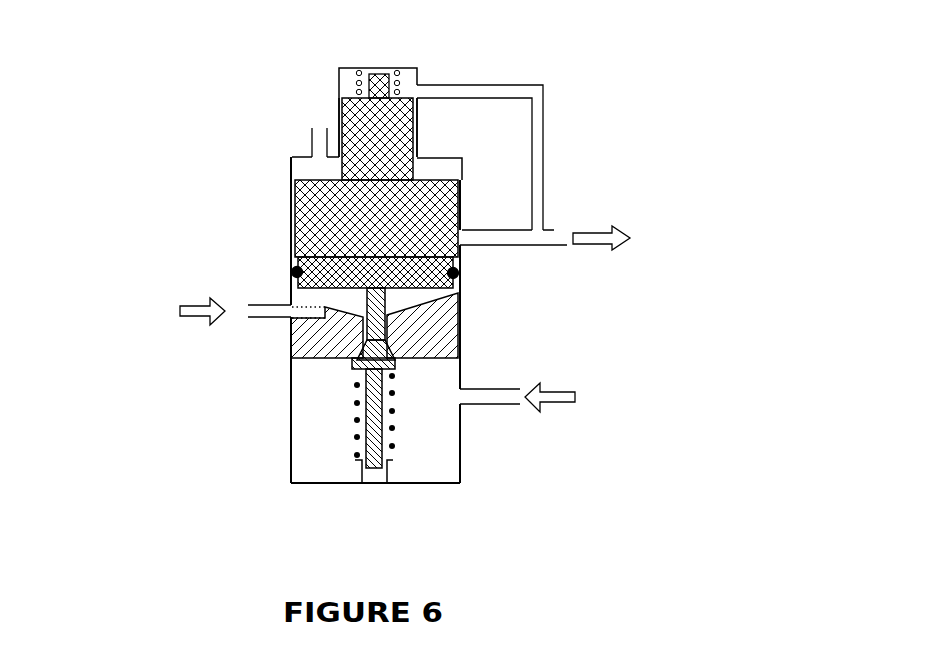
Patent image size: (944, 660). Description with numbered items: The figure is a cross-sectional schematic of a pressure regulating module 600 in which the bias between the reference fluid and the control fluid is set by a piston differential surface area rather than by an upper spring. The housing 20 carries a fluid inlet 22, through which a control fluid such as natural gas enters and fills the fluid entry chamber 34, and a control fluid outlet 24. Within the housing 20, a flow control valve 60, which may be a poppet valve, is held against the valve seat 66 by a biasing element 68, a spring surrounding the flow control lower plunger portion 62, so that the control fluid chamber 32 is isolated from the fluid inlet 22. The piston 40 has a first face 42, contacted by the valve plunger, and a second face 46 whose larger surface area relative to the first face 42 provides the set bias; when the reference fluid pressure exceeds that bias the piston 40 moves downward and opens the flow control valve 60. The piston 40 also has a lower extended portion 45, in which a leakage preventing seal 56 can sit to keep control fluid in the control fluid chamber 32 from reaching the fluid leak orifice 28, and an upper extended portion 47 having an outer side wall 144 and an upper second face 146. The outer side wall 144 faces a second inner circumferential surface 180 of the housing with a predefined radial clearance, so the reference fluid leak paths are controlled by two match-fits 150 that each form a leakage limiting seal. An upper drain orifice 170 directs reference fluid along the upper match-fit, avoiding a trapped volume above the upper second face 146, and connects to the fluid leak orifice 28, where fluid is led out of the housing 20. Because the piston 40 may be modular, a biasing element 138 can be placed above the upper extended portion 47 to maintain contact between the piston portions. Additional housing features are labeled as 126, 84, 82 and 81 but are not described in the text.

The pressure regulating module 600 is at (113, 82).
The match-fits 150 is at (283, 204).
The biasing element 138 is at (402, 65).
The upper second face 146 is at (415, 95).
The upper drain orifice 170 is at (507, 85).
The upper extended portion 47 is at (341, 105).
The slot 126 is at (312, 150).
The second inner circumferential surface 180 is at (418, 120).
The outer side wall 144 is at (417, 147).
The second face 46 is at (462, 160).
The upper housing wall 84 is at (292, 225).
The piston 40 is at (437, 213).
The fluid leak orifice 28 is at (553, 230).
The lower extended portion 45 is at (292, 262).
The leakage preventing seal 56 is at (457, 275).
The control fluid chamber 32 is at (325, 307).
The first face 42 is at (448, 293).
The control fluid outlet 24 is at (270, 318).
The valve seat 66 is at (410, 350).
The flow control valve 60 is at (357, 365).
The housing 20 is at (282, 413).
The fluid inlet 22 is at (487, 407).
The lower housing wall 82 is at (288, 430).
The fluid entry chamber 34 is at (447, 447).
The flow control lower plunger portion 62 is at (377, 468).
The biasing element 68 is at (393, 447).
The bottom wall 81 is at (440, 483).